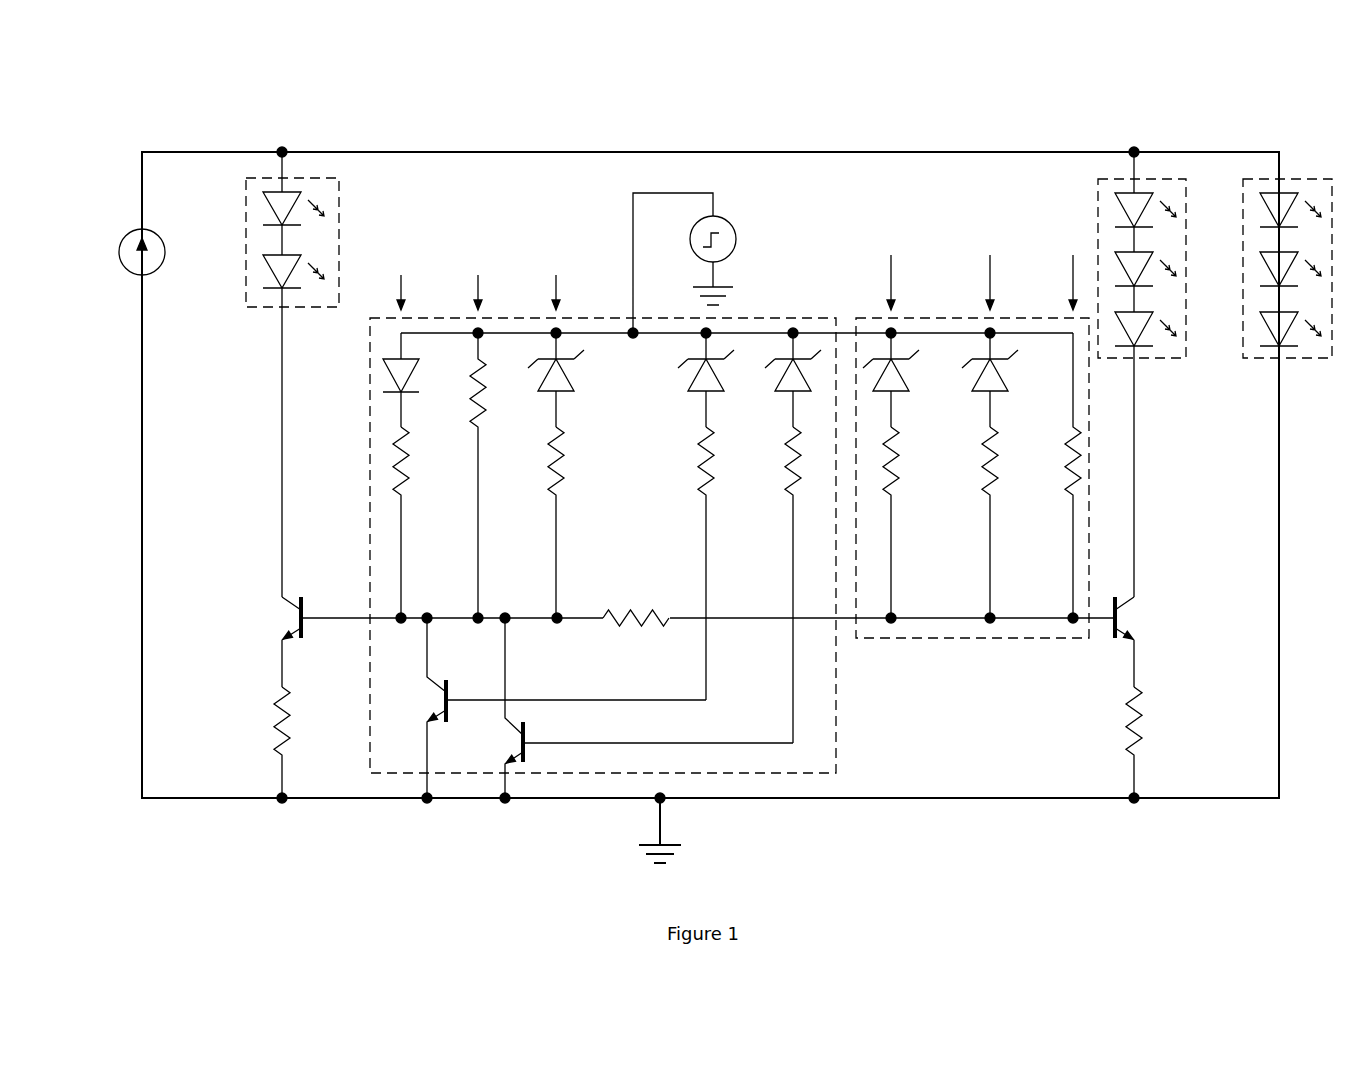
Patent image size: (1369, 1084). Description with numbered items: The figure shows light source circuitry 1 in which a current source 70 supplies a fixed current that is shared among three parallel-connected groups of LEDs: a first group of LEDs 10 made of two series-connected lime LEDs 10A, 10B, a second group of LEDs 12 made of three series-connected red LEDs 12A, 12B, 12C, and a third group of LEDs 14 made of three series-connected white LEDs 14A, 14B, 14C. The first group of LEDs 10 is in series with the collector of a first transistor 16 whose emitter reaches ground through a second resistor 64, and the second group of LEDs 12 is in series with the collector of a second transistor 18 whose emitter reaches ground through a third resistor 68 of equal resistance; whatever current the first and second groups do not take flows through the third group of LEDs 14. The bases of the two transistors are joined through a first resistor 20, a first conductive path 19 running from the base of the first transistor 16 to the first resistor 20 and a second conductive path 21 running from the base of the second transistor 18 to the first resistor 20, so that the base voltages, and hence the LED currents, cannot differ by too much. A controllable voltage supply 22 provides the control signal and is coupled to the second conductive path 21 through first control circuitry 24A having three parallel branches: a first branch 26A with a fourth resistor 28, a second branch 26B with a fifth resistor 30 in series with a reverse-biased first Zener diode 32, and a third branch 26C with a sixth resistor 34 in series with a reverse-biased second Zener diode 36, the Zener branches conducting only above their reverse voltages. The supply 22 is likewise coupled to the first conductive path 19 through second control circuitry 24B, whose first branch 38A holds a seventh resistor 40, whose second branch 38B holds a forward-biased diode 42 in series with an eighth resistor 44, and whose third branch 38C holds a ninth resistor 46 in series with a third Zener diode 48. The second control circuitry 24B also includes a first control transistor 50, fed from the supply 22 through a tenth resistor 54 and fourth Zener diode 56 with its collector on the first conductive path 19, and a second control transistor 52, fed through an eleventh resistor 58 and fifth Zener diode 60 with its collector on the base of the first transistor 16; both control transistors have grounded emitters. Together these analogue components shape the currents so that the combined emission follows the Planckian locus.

The light source circuitry 1 is at (112, 195).
The first group of LEDs 10 is at (284, 374).
The LED 10A is at (263, 212).
The LED 10B is at (263, 275).
The second group of LEDs 12 is at (1131, 362).
The LED 12A is at (1120, 192).
The LED 12B is at (1155, 287).
The LED 12C is at (1148, 348).
The third group of LEDs 14 is at (1264, 272).
The LED 14A is at (1262, 228).
The LED 14B is at (1262, 287).
The LED 14C is at (1270, 350).
The first transistor 16 is at (303, 630).
The second transistor 18 is at (1112, 635).
The first conductive path 19 is at (542, 612).
The first resistor 20 is at (600, 612).
The second conductive path 21 is at (735, 622).
The controllable voltage supply 22 is at (736, 240).
The first control circuitry 24A is at (975, 640).
The second control circuitry 24B is at (838, 765).
The first branch 26A is at (1055, 424).
The second branch 26B is at (995, 424).
The third branch 26C is at (906, 424).
The fourth resistor 28 is at (1068, 497).
The fifth resistor 30 is at (985, 497).
The first Zener diode 32 is at (995, 393).
The sixth resistor 34 is at (885, 497).
The second Zener diode 36 is at (895, 393).
The first branch 38A is at (422, 435).
The second branch 38B is at (485, 435).
The third branch 38C is at (555, 435).
The seventh resistor 40 is at (470, 425).
The diode 42 is at (410, 372).
The eighth resistor 44 is at (405, 495).
The ninth resistor 46 is at (550, 495).
The third Zener diode 48 is at (560, 393).
The first control transistor 50 is at (525, 745).
The second control transistor 52 is at (448, 698).
The tenth resistor 54 is at (785, 497).
The fourth Zener diode 56 is at (787, 393).
The eleventh resistor 58 is at (695, 497).
The fifth Zener diode 60 is at (700, 390).
The second resistor 64 is at (290, 757).
The third resistor 68 is at (1140, 690).
The current source 70 is at (128, 268).